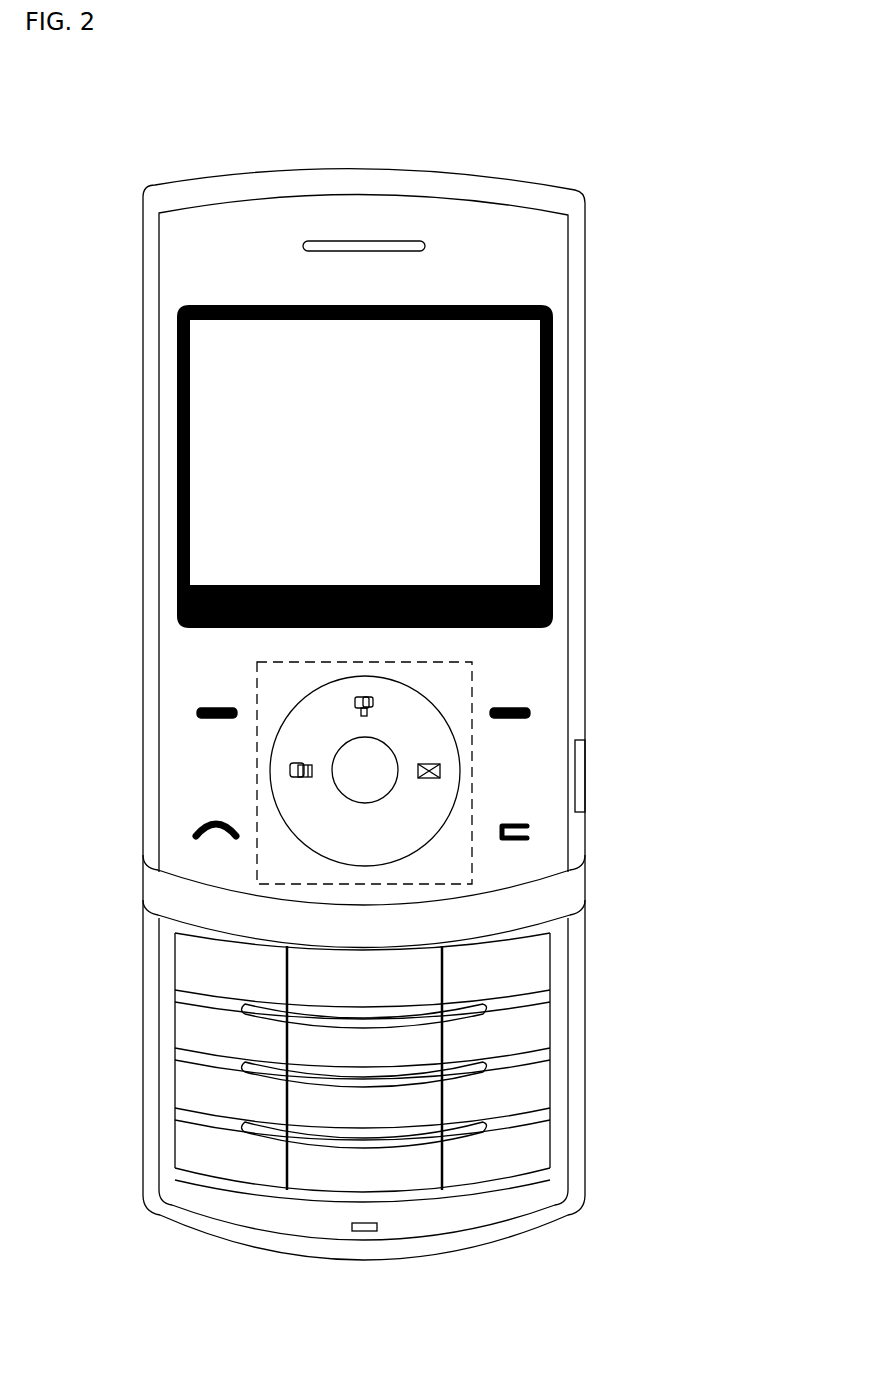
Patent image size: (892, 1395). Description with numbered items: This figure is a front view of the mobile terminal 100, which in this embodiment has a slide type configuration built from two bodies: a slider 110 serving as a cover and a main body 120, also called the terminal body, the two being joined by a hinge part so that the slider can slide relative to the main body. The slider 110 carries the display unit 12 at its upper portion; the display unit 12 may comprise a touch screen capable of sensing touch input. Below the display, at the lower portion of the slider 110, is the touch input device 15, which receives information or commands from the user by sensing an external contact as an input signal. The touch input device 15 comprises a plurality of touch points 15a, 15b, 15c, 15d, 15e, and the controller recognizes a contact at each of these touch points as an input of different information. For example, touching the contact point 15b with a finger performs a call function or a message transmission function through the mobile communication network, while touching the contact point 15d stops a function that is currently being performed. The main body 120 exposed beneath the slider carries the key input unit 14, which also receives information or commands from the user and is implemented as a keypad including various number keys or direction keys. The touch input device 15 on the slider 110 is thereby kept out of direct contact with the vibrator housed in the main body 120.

The mobile terminal 100 is at (180, 94).
The slider 110 is at (587, 275).
The main body 120 is at (531, 1240).
The display unit 12 is at (503, 437).
The key input unit 14 is at (537, 1082).
The touch input device 15 is at (373, 737).
The touch point 15a is at (197, 711).
The touch point 15b is at (193, 828).
The touch point 15c is at (530, 708).
The touch point 15d is at (533, 830).
The touch point 15e is at (472, 676).